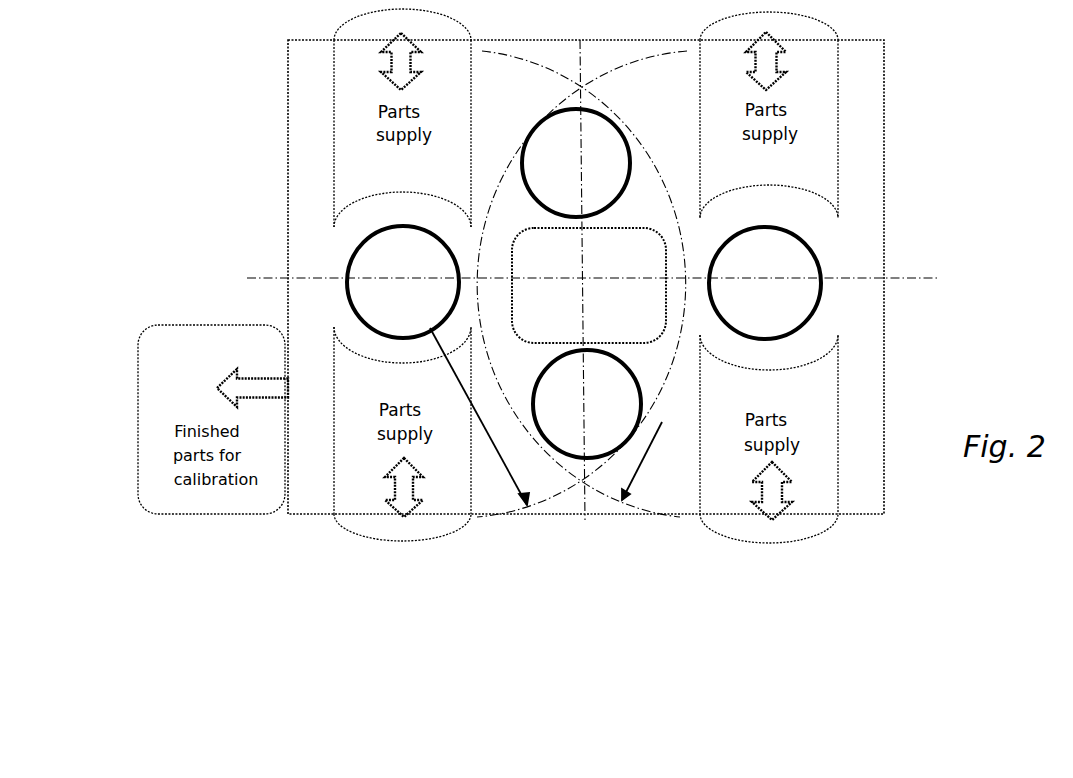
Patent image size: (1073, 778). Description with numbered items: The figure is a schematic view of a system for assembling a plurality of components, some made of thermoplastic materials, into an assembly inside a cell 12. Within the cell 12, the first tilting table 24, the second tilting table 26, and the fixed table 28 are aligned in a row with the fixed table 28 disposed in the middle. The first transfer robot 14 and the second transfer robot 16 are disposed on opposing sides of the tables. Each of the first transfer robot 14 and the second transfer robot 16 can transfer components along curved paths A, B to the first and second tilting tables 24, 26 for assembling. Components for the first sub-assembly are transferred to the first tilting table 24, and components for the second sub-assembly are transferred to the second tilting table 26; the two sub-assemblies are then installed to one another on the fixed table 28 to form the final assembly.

The cell 12 is at (287, 132).
The first transfer robot 14 is at (348, 263).
The second transfer robot 16 is at (822, 273).
The first tilting table 24 is at (592, 117).
The second tilting table 26 is at (576, 457).
The fixed table 28 is at (610, 228).
The curved path A is at (685, 243).
The curved path B is at (482, 237).